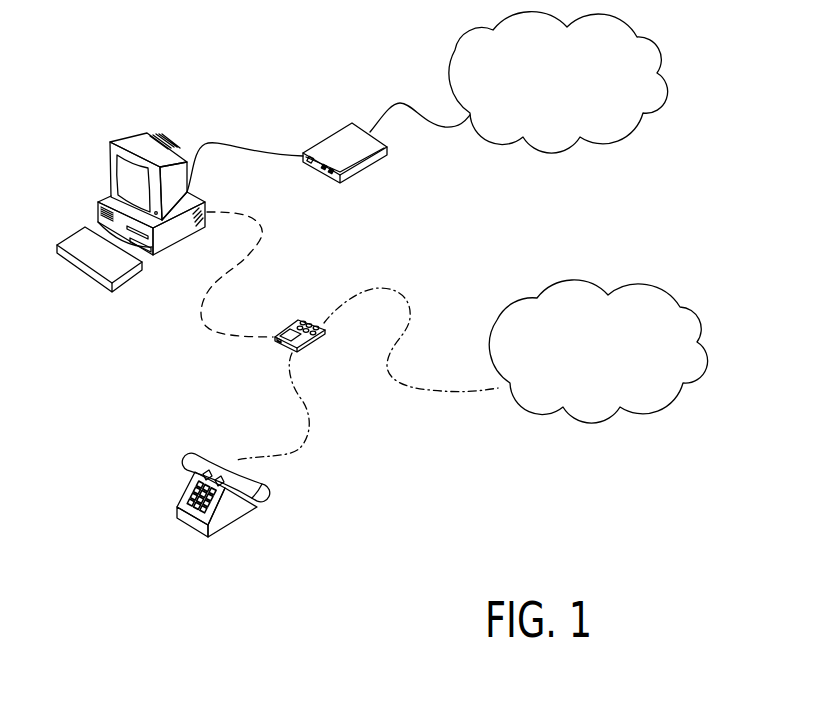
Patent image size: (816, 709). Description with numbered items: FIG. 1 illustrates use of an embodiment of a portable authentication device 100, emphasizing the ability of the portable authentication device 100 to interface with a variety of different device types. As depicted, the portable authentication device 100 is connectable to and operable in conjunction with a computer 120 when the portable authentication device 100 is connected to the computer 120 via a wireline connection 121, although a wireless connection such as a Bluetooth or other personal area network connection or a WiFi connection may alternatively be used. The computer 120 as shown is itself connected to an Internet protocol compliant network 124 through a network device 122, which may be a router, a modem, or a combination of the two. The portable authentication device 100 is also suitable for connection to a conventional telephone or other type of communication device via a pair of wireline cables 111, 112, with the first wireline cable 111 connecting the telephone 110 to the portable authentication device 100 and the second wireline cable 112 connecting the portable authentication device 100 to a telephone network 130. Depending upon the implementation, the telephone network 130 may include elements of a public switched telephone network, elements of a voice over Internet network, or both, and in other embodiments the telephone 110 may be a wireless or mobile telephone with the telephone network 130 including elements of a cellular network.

The portable authentication device 100 is at (301, 318).
The telephone 110 is at (233, 530).
The wireline cable 111 is at (311, 420).
The wireline cable 112 is at (403, 329).
The computer 120 is at (120, 137).
The wireline connection 121 is at (202, 313).
The network device 122 is at (360, 172).
The Internet protocol compliant network 124 is at (453, 61).
The telephone network 130 is at (677, 407).